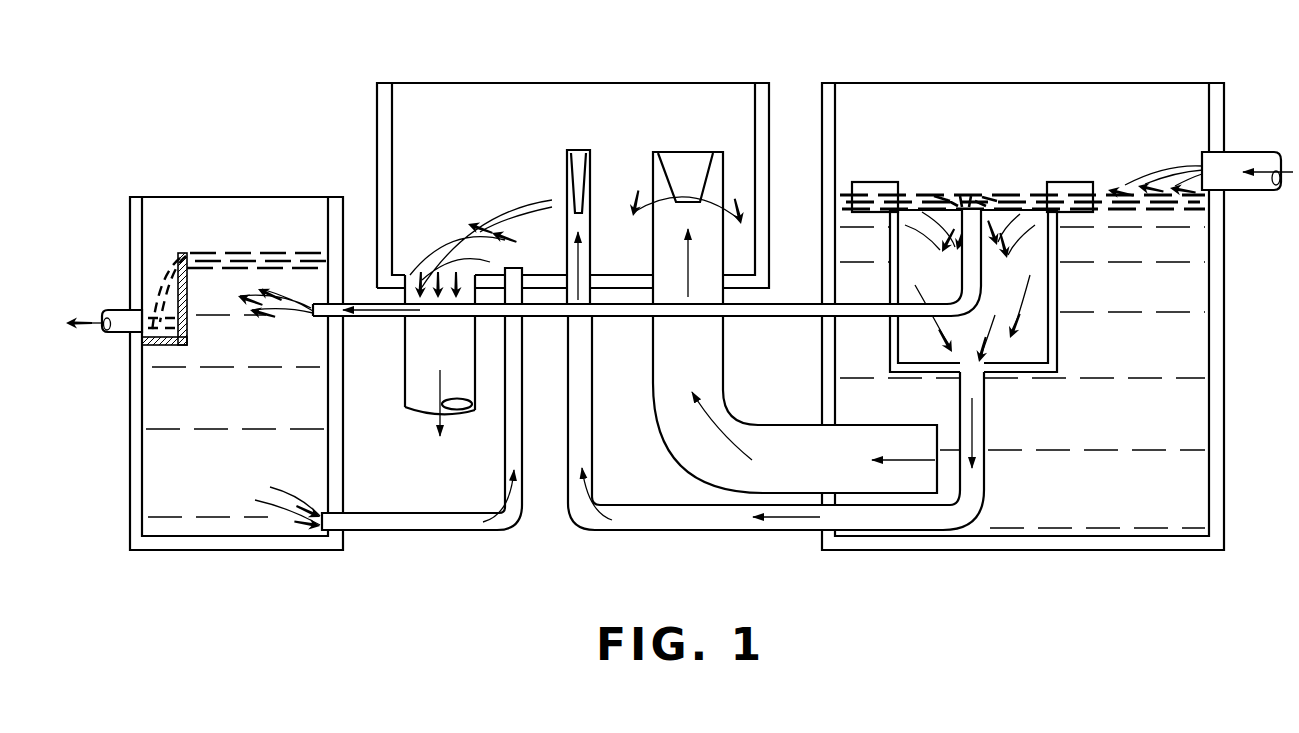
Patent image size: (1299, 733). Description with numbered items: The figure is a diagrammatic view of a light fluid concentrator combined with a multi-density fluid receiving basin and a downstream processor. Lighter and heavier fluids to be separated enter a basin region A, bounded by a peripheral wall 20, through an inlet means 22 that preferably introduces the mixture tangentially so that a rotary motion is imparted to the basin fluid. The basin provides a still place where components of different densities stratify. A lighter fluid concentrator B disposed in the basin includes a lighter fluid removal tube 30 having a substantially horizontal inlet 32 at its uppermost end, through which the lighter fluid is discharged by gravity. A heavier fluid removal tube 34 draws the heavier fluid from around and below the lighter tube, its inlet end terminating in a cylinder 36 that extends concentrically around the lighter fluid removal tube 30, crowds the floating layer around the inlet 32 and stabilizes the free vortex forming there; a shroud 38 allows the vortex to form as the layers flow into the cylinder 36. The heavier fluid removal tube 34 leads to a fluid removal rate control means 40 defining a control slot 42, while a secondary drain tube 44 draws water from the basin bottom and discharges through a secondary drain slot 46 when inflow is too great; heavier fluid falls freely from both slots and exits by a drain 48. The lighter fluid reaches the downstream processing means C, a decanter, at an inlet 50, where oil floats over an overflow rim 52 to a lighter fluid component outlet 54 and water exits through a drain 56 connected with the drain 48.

The basin region A is at (1204, 116).
The lighter fluid concentrator B is at (1006, 187).
The downstream processing means C is at (207, 192).
The peripheral wall 20 is at (1203, 268).
The inlet means 22 is at (1246, 150).
The lighter fluid removal tube 30 is at (786, 300).
The inlet 32 is at (968, 190).
The heavier fluid removal tube 34 is at (721, 534).
The cylinder 36 is at (1060, 334).
The shroud 38 is at (861, 179).
The fluid removal rate control means 40 is at (473, 81).
The control slot 42 is at (576, 148).
The secondary drain tube 44 is at (784, 421).
The secondary drain slot 46 is at (675, 150).
The drain 48 is at (404, 406).
The inlet 50 is at (327, 307).
The overflow rim 52 is at (188, 284).
The lighter fluid component outlet 54 is at (118, 331).
The drain 56 is at (343, 532).